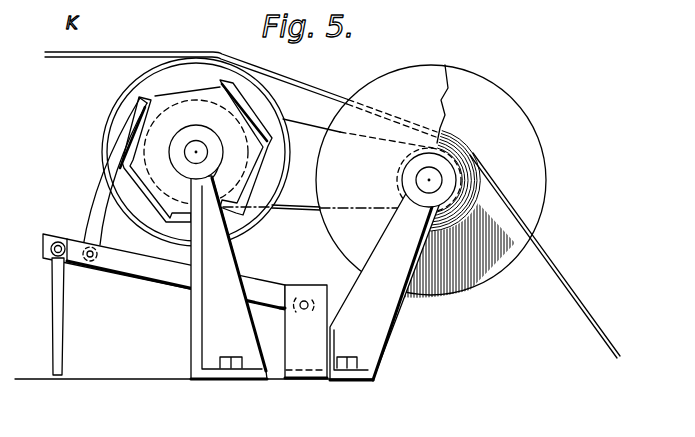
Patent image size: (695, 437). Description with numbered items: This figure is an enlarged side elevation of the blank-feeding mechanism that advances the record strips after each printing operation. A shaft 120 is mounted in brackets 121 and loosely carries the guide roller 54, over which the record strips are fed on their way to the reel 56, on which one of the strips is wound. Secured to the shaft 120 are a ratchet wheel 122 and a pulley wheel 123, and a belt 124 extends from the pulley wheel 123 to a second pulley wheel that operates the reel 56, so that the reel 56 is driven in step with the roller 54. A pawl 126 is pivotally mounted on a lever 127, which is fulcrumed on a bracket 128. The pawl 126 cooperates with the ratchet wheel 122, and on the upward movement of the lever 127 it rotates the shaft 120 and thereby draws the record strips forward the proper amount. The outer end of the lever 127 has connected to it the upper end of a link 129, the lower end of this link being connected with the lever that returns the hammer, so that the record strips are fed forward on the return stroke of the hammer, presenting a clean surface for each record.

The guide roller 54 is at (115, 107).
The reel 56 is at (517, 130).
The shaft 120 is at (190, 150).
The brackets 121 is at (195, 316).
The ratchet wheel 122 is at (156, 98).
The pulley wheel 123 is at (212, 84).
The belt 124 is at (303, 118).
The pawl 126 is at (103, 192).
The lever 127 is at (112, 260).
The bracket 128 is at (307, 347).
The link 129 is at (58, 363).